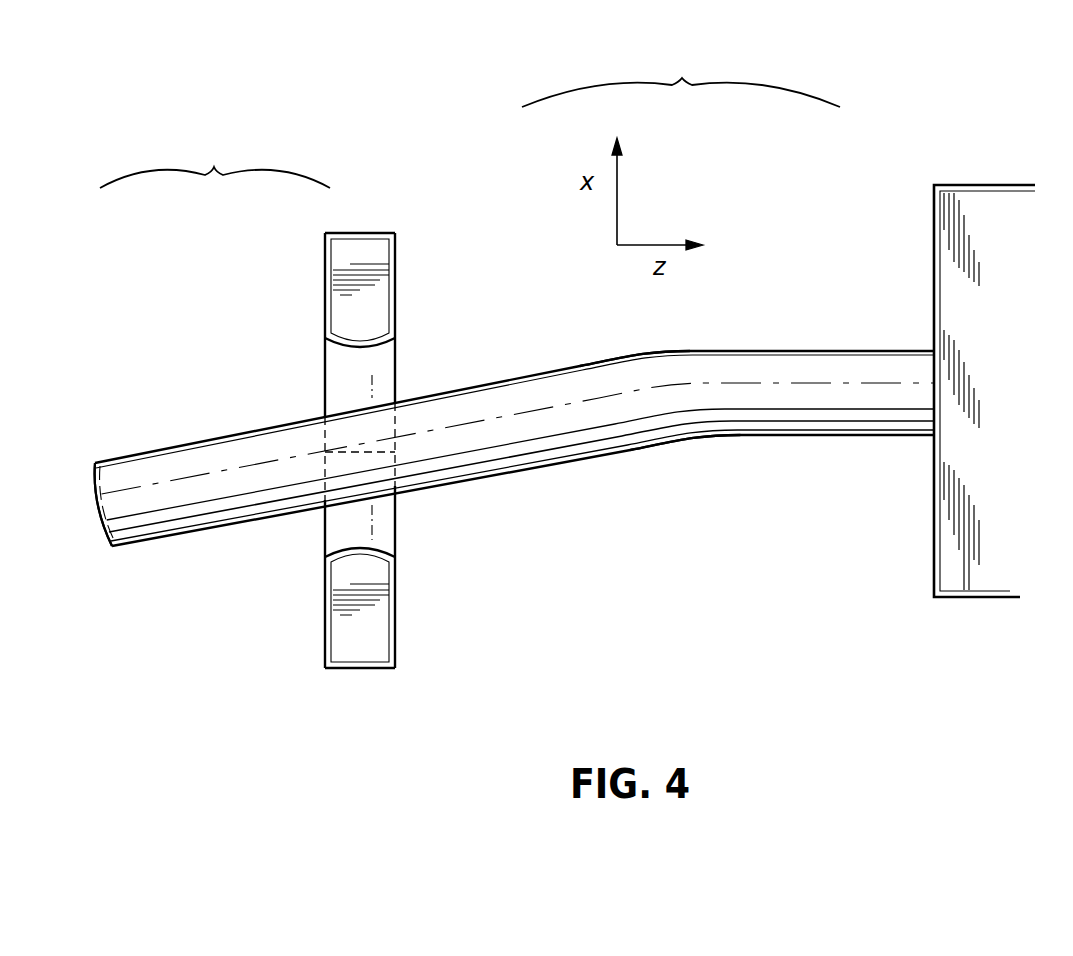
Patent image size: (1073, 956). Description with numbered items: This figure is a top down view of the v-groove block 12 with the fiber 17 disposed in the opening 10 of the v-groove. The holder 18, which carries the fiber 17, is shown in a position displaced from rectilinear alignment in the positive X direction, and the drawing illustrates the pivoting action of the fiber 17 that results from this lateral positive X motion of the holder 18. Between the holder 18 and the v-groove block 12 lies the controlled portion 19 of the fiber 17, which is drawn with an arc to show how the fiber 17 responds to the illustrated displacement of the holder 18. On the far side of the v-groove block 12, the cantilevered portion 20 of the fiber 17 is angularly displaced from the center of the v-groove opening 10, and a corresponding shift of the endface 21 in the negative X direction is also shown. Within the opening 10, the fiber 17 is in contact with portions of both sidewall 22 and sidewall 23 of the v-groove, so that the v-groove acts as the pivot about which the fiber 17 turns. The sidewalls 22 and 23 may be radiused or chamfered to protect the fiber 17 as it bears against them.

The opening 10 is at (347, 521).
The v-groove block 12 is at (348, 627).
The fiber 17 is at (530, 413).
The holder 18 is at (987, 496).
The controlled portion 19 is at (681, 77).
The cantilevered portion 20 is at (215, 164).
The endface 21 is at (91, 507).
The sidewall 22 is at (383, 523).
The sidewall 23 is at (380, 367).